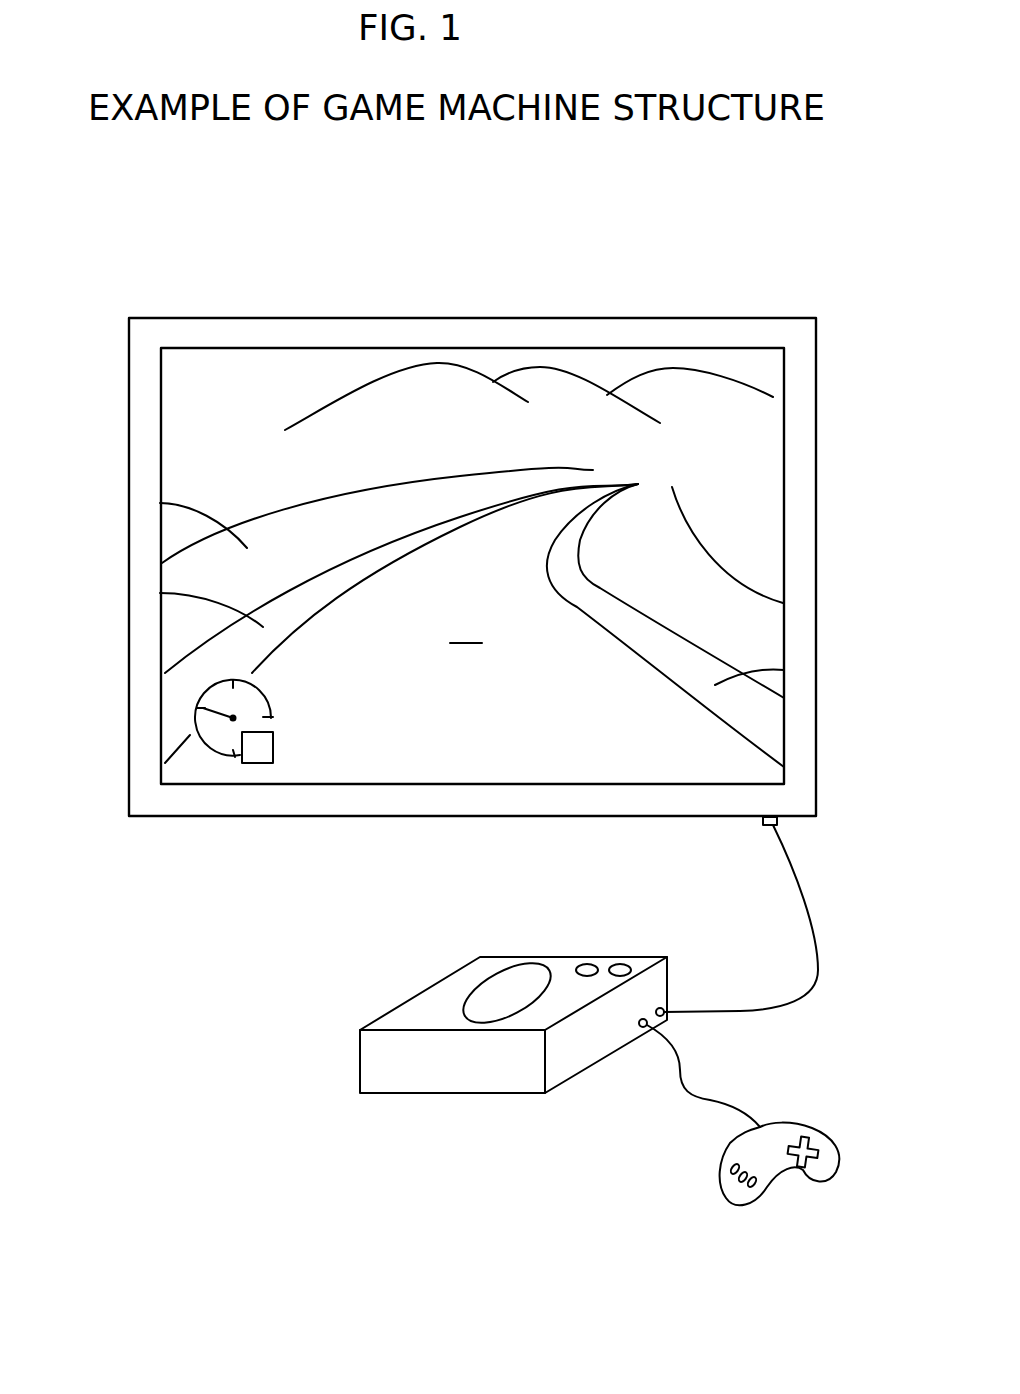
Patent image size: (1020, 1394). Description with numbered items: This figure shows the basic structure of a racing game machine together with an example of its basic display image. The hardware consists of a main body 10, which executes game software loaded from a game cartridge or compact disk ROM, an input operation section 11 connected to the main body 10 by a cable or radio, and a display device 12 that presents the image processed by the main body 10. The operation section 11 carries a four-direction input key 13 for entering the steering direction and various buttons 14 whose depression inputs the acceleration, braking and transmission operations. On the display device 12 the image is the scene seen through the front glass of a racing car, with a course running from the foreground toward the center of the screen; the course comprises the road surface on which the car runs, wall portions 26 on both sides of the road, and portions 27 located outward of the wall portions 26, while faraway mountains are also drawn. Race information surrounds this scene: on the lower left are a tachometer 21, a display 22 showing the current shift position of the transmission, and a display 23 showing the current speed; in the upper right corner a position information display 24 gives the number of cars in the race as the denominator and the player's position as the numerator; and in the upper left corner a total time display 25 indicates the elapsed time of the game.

The main body 10 is at (424, 992).
The input operation section 11 is at (822, 1132).
The display device 12 is at (816, 385).
The four-direction input key 13 is at (805, 1163).
The buttons 14 is at (747, 1192).
The tachometer 21 is at (178, 690).
The shift position display 22 is at (258, 763).
The speed display 23 is at (337, 772).
The position information display 24 is at (730, 445).
The total time display 25 is at (172, 402).
The wall portions 26 is at (160, 593).
The outward portions 27 is at (160, 503).